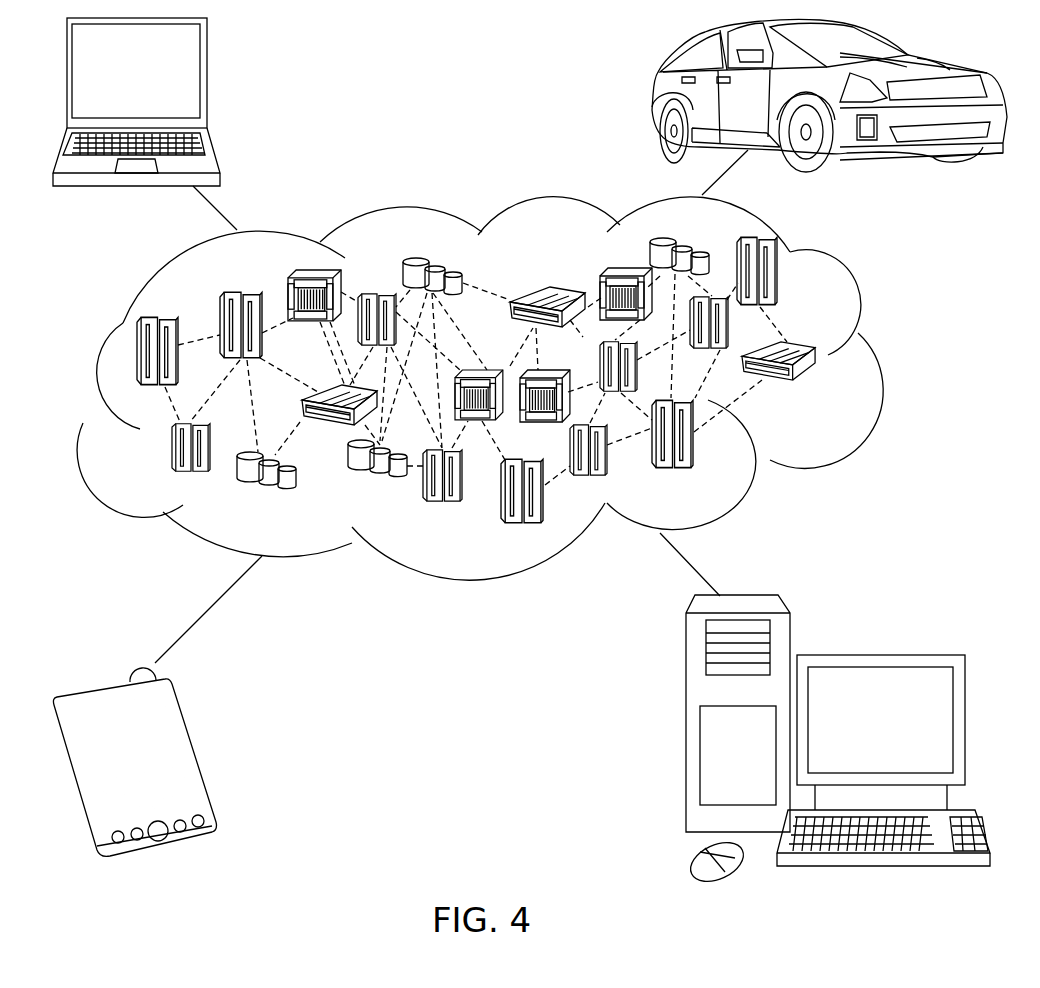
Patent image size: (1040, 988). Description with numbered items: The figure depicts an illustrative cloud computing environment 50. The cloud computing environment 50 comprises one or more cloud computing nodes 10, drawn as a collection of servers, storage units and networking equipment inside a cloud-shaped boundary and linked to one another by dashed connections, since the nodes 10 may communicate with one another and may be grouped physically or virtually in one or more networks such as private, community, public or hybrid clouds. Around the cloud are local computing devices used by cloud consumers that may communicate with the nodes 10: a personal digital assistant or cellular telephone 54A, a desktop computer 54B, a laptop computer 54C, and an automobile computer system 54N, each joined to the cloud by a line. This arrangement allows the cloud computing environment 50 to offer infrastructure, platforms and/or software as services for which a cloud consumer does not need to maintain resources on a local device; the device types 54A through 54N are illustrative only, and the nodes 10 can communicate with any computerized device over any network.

The cloud computing node 10 is at (828, 392).
The cloud computing environment 50 is at (880, 360).
The personal digital assistant or cellular telephone 54A is at (207, 750).
The desktop computer 54B is at (880, 655).
The laptop computer 54C is at (205, 80).
The automobile computer system 54N is at (655, 97).